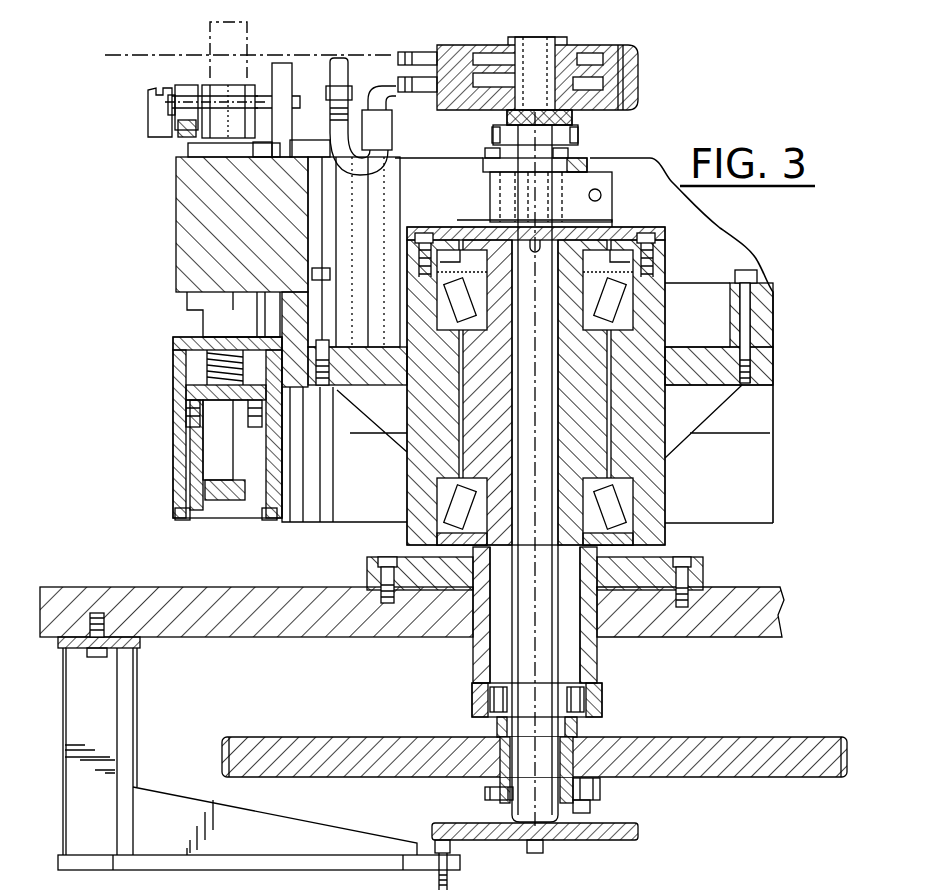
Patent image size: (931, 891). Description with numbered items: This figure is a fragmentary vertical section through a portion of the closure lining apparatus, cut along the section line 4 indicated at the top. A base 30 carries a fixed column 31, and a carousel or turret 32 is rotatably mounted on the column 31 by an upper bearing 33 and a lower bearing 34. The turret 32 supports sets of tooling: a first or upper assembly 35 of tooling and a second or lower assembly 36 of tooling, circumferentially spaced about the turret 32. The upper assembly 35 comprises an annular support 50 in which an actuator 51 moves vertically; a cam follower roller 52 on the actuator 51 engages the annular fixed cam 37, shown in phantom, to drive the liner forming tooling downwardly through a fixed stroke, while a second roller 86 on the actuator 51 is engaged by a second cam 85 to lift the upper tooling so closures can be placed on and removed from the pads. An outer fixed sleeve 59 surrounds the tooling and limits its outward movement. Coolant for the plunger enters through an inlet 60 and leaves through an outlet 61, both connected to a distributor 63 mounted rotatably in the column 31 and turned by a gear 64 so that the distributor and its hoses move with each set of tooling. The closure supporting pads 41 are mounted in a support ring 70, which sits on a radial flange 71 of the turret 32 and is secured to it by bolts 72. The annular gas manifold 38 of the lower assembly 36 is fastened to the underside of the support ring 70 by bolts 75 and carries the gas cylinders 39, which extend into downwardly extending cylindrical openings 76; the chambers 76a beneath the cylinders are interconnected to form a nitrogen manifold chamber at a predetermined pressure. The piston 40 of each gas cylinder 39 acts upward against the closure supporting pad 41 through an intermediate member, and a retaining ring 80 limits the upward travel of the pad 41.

The section line 4- 4 is at (150, 28).
The base 30 is at (743, 577).
The column 31 is at (600, 670).
The turret 32 is at (668, 486).
The upper bearing 33 is at (628, 308).
The lower bearing 34 is at (622, 507).
The first assembly of tooling 35 is at (157, 248).
The second assembly of tooling 36 is at (171, 428).
The annular fixed cam 37 is at (283, 20).
The annular gas manifold 38 is at (293, 492).
The gas cylinder 39 is at (213, 468).
The piston 40 is at (230, 408).
The closure supporting pad 41 is at (203, 355).
The annular support 50 is at (176, 212).
The actuator 51 is at (224, 146).
The cam follower roller 52 is at (187, 123).
The outer fixed sleeve 59 is at (188, 148).
The inlet 60 is at (392, 132).
The outlet 61 is at (352, 168).
The distributor 63 is at (653, 72).
The gear 64 is at (764, 737).
The support ring 70 is at (177, 353).
The radial flange 71 is at (370, 362).
The bolt 72 is at (328, 272).
The bolt 75 is at (266, 522).
The cylindrical opening 76 is at (174, 497).
The chamber 76a is at (232, 492).
The retaining ring 80 is at (180, 337).
The second cam 85 is at (186, 128).
The second roller 86 is at (192, 86).